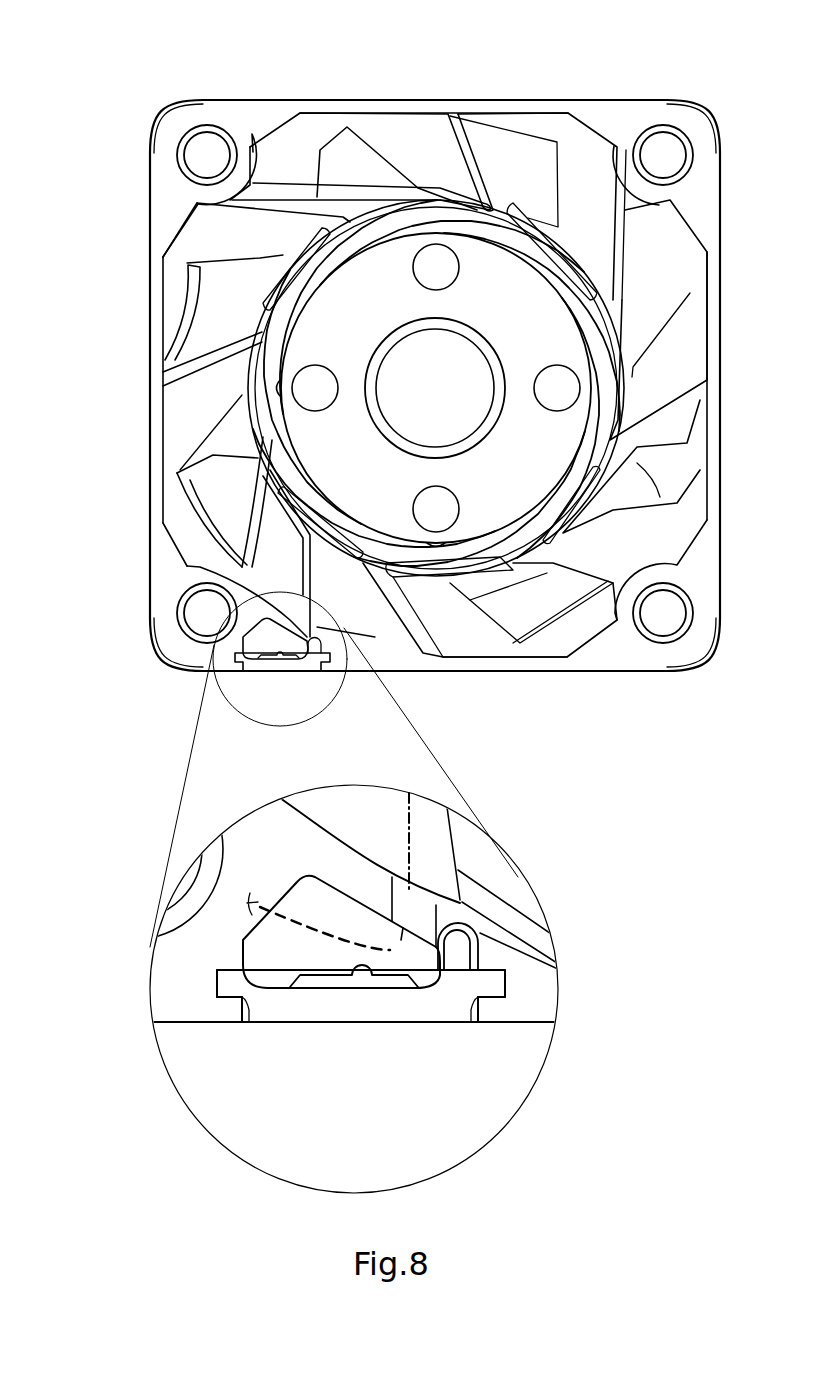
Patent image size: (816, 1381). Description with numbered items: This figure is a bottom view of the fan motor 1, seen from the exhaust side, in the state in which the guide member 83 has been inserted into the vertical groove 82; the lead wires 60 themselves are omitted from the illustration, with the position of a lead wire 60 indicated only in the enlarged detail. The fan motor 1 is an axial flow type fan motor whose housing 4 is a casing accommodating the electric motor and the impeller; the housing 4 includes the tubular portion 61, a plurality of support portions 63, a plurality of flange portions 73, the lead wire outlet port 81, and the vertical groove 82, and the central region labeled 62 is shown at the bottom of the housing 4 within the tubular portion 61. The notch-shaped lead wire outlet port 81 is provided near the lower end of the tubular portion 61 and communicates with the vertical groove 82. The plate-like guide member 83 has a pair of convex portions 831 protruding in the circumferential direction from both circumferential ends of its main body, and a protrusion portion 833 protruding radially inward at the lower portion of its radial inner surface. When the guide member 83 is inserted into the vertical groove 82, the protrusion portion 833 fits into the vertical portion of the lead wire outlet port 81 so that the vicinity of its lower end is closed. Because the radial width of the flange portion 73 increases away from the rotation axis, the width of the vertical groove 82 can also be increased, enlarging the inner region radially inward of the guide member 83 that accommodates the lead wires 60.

The fan motor 1 is at (540, 57).
The housing 4 is at (163, 230).
The lead wires 60 is at (407, 822).
The tubular portion 61 is at (190, 520).
The impeller hub 62 is at (375, 265).
The support portions 63 is at (163, 377).
The flange portions 73 is at (192, 600).
The lead wire outlet port 81 is at (450, 908).
The vertical groove 82 is at (286, 946).
The guide member 83 is at (285, 670).
The convex portions 831 is at (227, 985).
The protrusion portion 833 is at (457, 942).